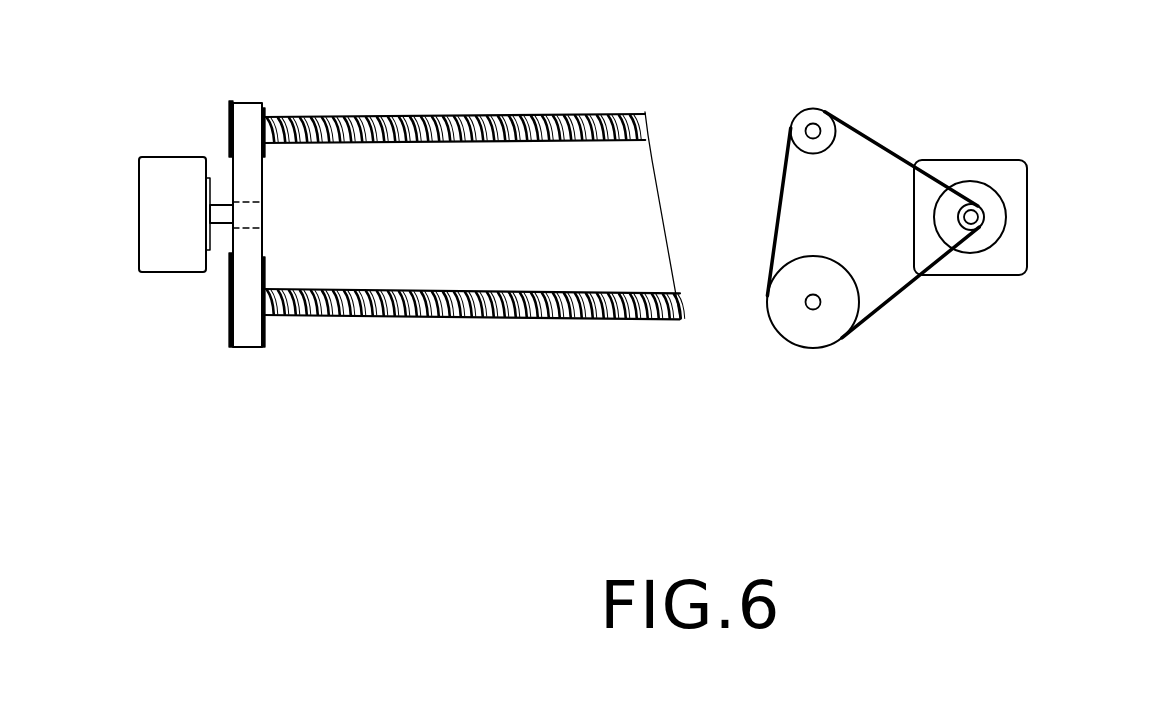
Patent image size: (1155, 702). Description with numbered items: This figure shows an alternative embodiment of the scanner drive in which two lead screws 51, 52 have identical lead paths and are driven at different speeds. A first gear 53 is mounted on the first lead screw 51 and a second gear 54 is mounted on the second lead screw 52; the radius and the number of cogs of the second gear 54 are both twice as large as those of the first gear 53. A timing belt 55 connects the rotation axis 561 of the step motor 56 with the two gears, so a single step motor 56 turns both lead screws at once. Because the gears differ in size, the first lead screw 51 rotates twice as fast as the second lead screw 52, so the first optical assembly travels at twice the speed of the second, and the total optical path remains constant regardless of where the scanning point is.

The first lead screw 51 is at (540, 307).
The second lead screw 52 is at (505, 128).
The first gear 53 is at (232, 317).
The second gear 54 is at (233, 120).
The timing belt 55 is at (248, 262).
The step motor 56 is at (166, 172).
The rotation axis 561 is at (253, 215).